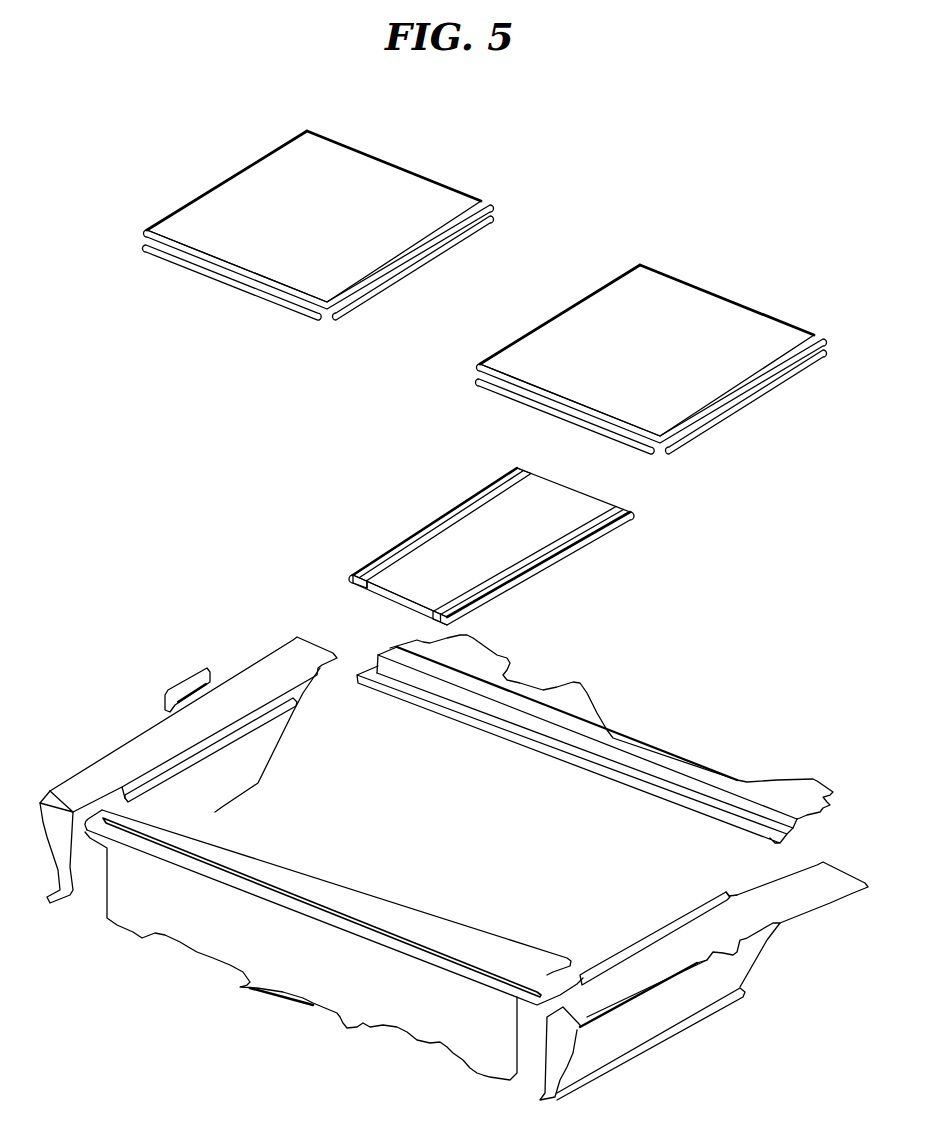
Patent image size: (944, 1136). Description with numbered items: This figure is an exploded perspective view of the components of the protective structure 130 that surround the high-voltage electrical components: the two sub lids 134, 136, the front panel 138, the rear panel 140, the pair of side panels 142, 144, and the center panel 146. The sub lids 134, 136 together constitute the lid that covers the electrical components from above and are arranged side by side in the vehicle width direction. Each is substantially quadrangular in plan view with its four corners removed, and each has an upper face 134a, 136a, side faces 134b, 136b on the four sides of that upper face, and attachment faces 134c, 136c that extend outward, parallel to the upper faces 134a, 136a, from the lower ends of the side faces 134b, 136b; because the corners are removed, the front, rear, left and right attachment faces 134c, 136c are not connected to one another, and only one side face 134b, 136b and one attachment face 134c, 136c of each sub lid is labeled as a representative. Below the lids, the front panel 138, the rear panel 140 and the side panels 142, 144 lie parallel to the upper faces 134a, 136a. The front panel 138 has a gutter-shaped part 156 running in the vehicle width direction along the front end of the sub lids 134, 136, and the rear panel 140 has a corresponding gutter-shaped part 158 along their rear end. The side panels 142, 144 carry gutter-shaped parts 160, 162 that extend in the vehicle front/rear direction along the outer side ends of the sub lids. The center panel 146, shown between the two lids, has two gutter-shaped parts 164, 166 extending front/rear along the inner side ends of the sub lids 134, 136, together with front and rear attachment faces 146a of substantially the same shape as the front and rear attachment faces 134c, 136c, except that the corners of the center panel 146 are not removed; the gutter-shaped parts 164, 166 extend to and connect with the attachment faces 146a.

The protective structure 130 is at (720, 177).
The sub lid 134 is at (438, 173).
The upper face 134a is at (308, 147).
The side face 134b is at (308, 297).
The attachment face 134c is at (150, 253).
The sub lid 136 is at (790, 314).
The upper face 136a is at (647, 332).
The side face 136b is at (715, 421).
The attachment face 136c is at (548, 416).
The front panel 138 is at (520, 968).
The rear panel 140 is at (493, 662).
The side panel 142 is at (260, 672).
The side panel 144 is at (773, 902).
The center panel 146 is at (347, 551).
The attachment face 146a is at (352, 583).
The gutter-shaped part 156 is at (453, 913).
The gutter-shaped part 158 is at (650, 790).
The gutter-shaped part 160 is at (287, 717).
The gutter-shaped part 162 is at (663, 923).
The gutter-shaped part 164 is at (405, 550).
The gutter-shaped part 166 is at (587, 522).